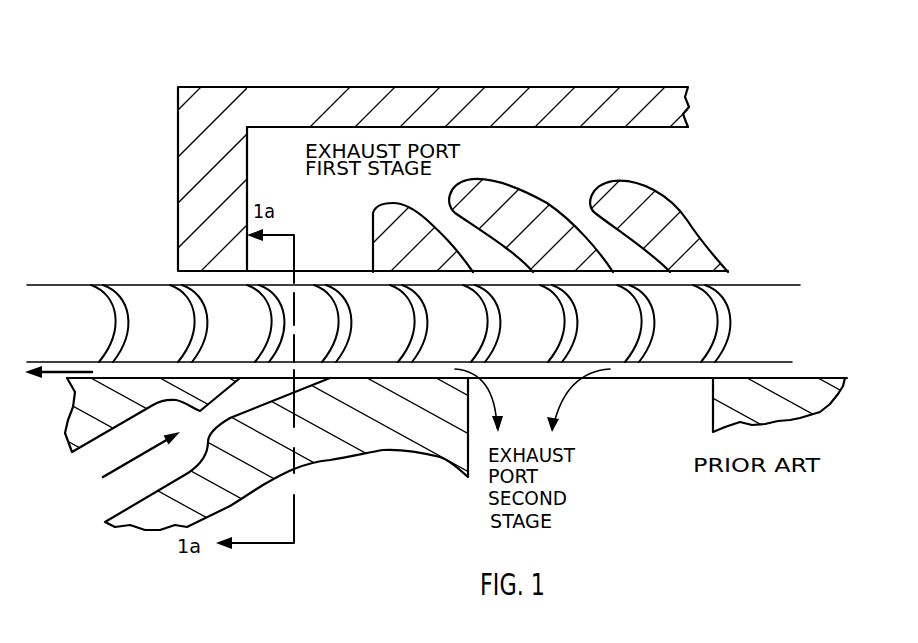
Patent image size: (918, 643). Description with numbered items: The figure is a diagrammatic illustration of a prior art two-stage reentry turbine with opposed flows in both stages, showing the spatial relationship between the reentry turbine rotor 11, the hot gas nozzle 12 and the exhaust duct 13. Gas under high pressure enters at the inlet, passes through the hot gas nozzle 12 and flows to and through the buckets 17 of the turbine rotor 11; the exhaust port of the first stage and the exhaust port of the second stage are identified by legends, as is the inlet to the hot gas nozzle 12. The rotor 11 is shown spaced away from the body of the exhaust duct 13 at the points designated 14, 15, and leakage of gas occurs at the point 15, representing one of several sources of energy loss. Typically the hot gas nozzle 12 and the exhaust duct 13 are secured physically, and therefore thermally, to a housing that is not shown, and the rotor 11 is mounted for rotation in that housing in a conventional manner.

The reentry turbine rotor 11 is at (678, 308).
The hot gas nozzle 12 is at (243, 399).
The exhaust duct 13 is at (558, 102).
The spacing point 14 is at (272, 369).
The spacing point 15 is at (308, 276).
The bucket 17 is at (272, 368).